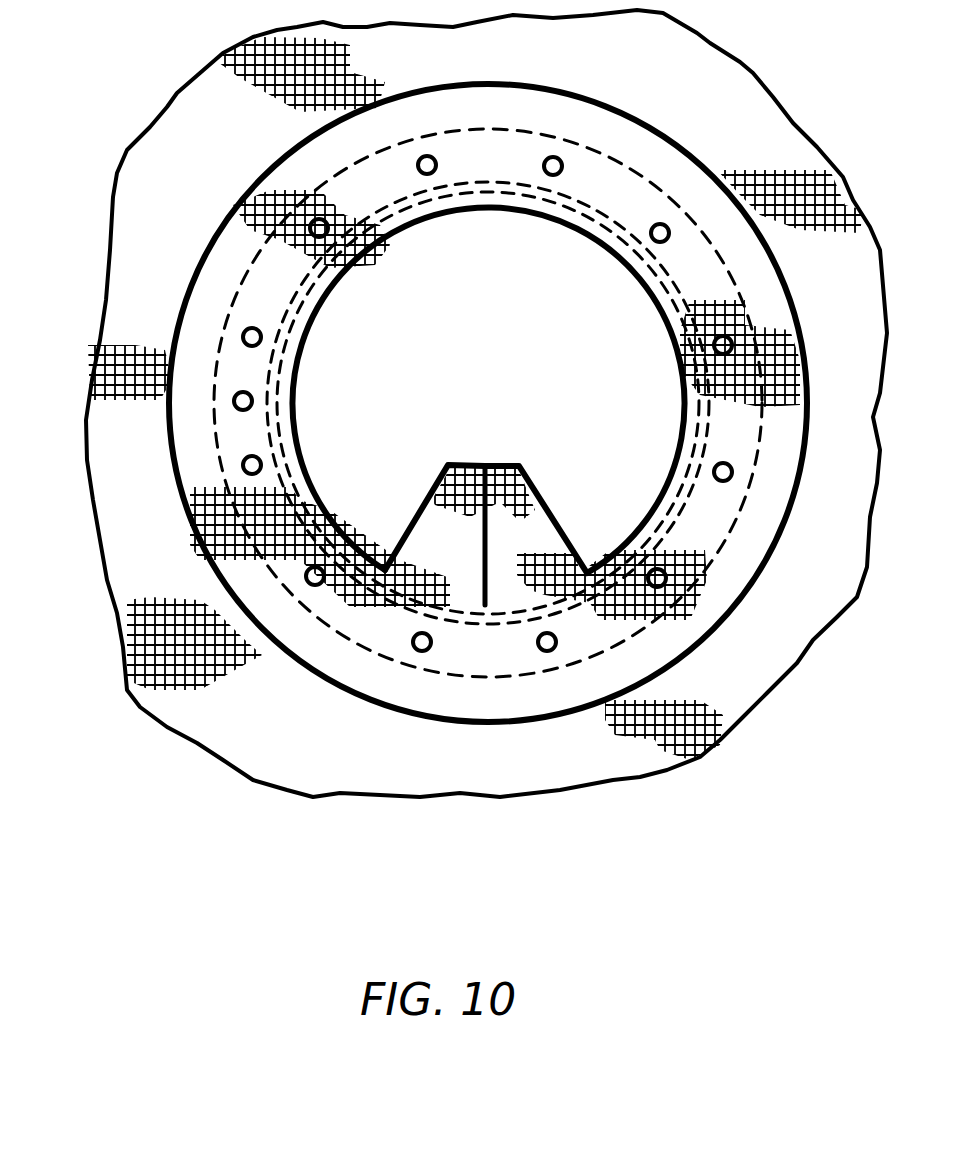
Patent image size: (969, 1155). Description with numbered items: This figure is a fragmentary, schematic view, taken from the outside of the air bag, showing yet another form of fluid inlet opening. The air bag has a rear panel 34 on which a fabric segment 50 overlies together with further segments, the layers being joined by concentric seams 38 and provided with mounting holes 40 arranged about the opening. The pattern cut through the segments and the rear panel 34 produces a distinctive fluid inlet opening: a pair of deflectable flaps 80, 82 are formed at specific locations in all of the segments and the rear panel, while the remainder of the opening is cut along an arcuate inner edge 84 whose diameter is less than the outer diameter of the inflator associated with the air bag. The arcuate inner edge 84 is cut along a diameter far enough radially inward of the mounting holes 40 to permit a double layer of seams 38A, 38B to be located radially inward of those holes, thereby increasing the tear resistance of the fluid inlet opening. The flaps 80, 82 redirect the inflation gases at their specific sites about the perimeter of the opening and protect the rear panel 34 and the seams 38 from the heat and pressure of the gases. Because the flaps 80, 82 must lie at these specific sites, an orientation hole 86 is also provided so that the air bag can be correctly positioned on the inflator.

The rear panel 34 is at (485, 403).
The fabric segment 50 is at (512, 404).
The concentric seams 38 is at (648, 184).
The seam 38A is at (288, 333).
The seam 38B is at (297, 290).
The mounting holes 40 is at (493, 507).
The orientation hole 86 is at (141, 443).
The deflectable flap 80 is at (435, 512).
The deflectable flap 82 is at (517, 496).
The arcuate inner edge 84 is at (488, 390).